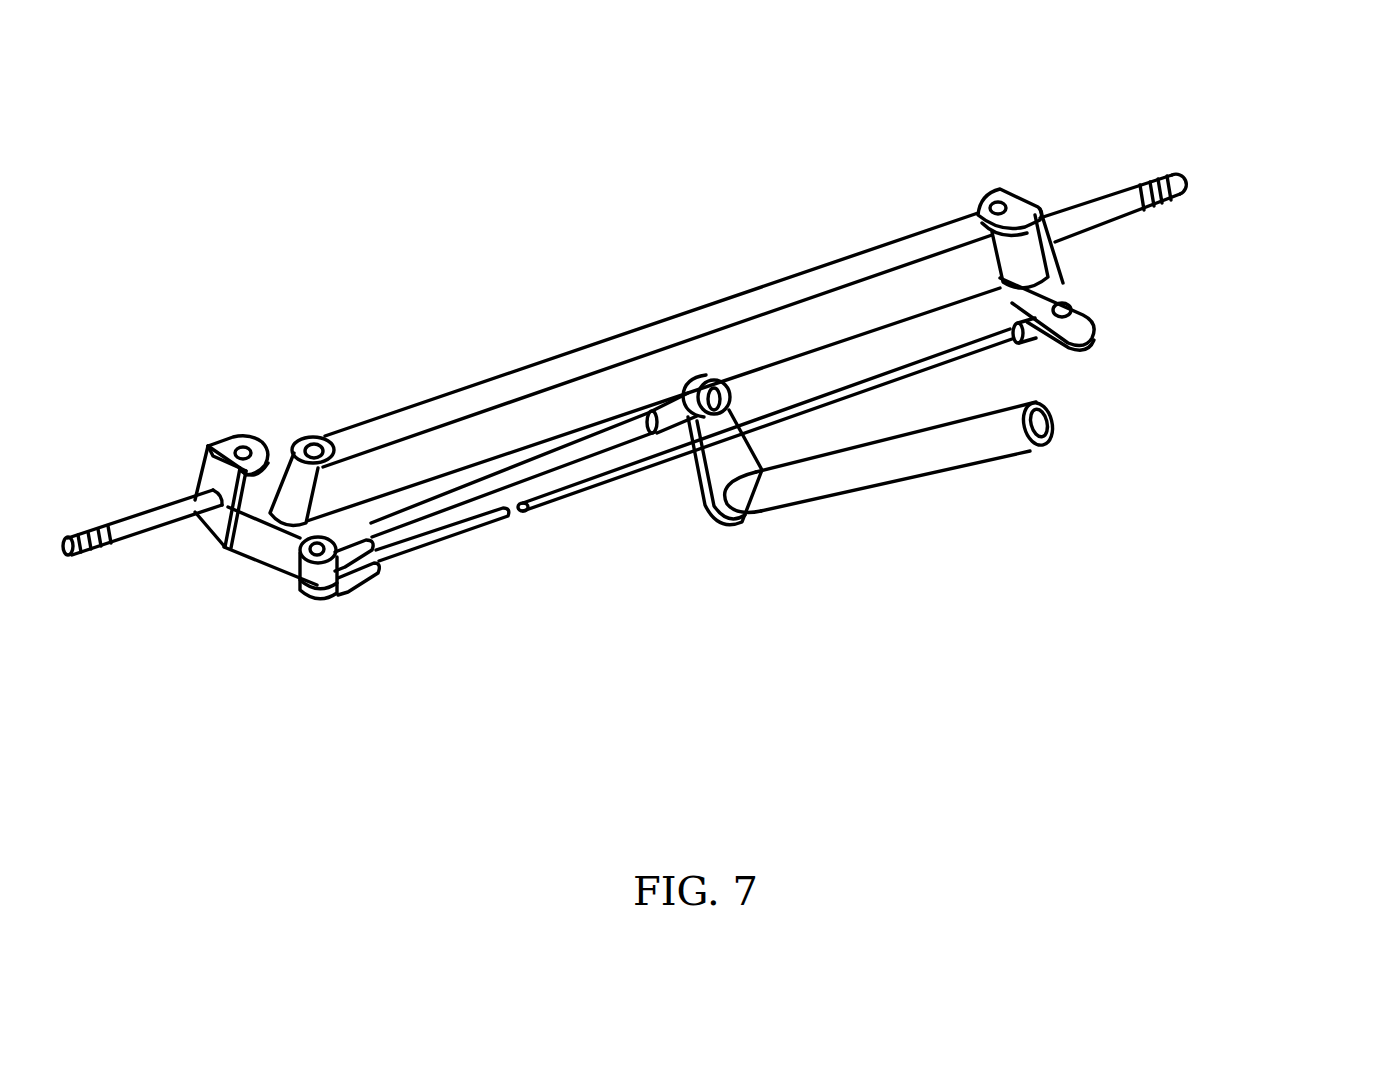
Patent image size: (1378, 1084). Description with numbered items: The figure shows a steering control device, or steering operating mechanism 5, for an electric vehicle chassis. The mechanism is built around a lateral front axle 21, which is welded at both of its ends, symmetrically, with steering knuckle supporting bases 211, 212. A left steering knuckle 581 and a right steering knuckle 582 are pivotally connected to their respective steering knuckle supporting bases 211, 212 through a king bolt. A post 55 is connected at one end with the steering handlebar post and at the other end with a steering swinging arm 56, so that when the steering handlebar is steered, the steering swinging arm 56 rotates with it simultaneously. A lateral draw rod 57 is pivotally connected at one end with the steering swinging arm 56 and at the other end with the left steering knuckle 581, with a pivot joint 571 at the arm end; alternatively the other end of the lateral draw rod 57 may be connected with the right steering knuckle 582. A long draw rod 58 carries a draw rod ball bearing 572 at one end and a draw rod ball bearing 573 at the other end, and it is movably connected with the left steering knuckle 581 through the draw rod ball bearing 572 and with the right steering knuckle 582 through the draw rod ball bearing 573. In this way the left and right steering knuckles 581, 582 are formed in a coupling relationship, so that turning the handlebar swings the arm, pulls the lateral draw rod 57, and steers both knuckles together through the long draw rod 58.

The steering control device 5 is at (392, 277).
The front axle 21 is at (498, 393).
The steering knuckle supporting base 211 is at (289, 495).
The steering knuckle supporting base 212 is at (1025, 255).
The post 55 is at (893, 460).
The steering swinging arm 56 is at (730, 457).
The lateral draw rod 57 is at (533, 467).
The long draw rod 58 is at (633, 470).
The pivot joint 571 is at (716, 386).
The draw rod ball bearing 572 is at (320, 580).
The draw rod ball bearing 573 is at (1033, 340).
The left steering knuckle 581 is at (208, 530).
The right steering knuckle 582 is at (1090, 342).